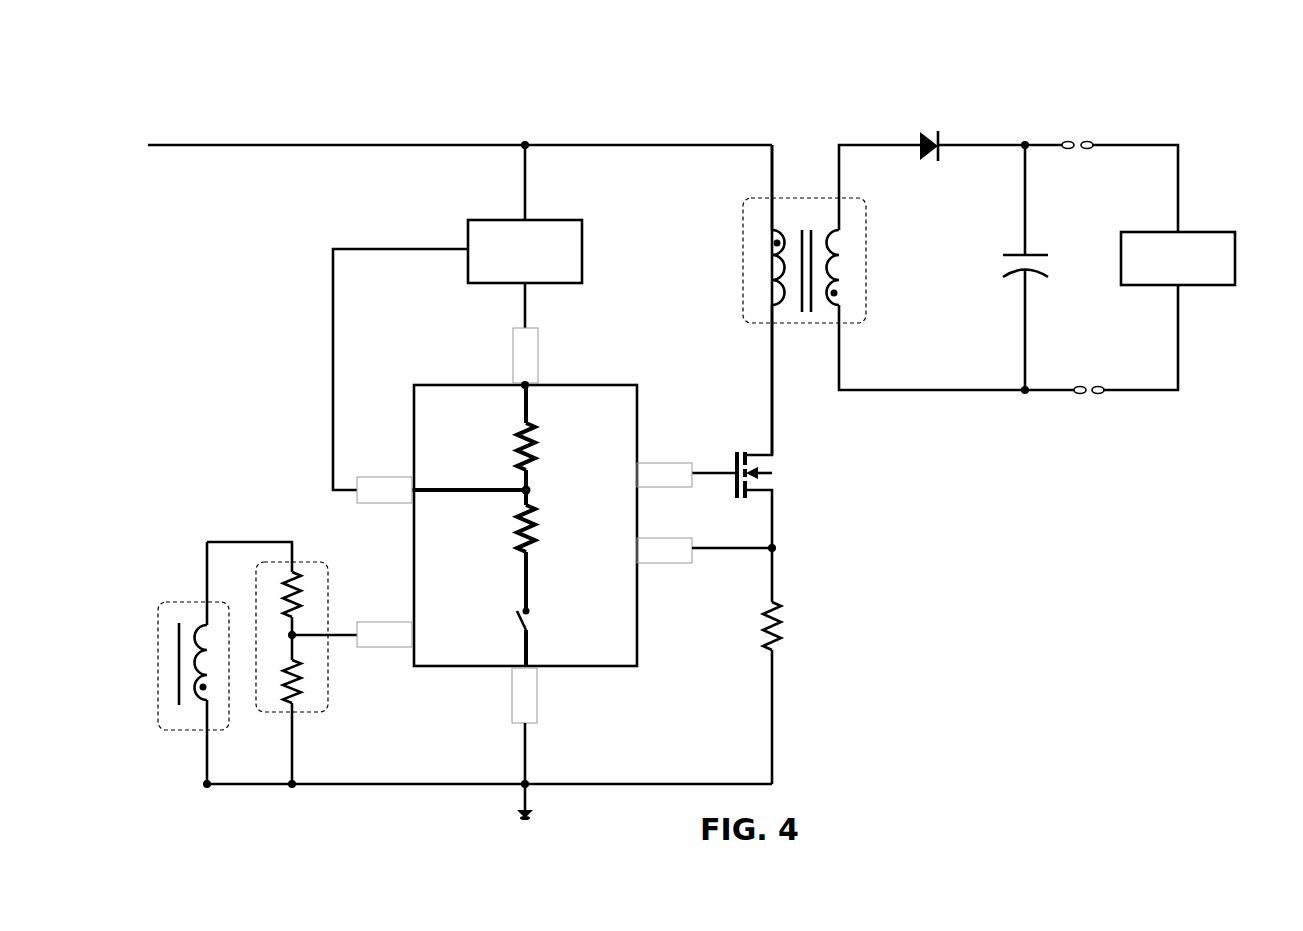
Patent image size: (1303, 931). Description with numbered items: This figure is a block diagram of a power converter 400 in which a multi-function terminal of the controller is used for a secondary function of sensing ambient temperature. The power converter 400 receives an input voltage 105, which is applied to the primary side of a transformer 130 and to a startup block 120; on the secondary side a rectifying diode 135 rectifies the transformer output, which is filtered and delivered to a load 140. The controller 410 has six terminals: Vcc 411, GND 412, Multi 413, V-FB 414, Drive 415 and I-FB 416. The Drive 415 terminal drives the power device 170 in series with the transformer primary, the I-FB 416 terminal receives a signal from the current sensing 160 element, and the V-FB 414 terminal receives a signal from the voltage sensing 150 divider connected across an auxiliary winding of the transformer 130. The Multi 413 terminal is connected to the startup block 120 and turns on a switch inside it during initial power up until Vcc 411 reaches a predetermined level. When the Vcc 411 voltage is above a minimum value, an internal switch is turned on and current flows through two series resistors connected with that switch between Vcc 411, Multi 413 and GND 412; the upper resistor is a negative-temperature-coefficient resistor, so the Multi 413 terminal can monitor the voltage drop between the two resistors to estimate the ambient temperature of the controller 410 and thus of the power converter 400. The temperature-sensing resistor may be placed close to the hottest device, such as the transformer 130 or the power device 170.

The input voltage 105 is at (460, 148).
The startup block 120 is at (457, 317).
The transformer 130 is at (805, 205).
The rectifying diode 135 is at (929, 116).
The load 140 is at (1205, 221).
The voltage sensing 150 is at (309, 727).
The current sensing 160 is at (788, 631).
The power device 170 is at (785, 467).
The power converter 400 is at (1021, 222).
The controller 410 is at (649, 379).
The Vcc terminal 411 is at (525, 358).
The GND terminal 412 is at (524, 744).
The Multi terminal 413 is at (384, 490).
The V-FB terminal 414 is at (384, 634).
The Drive terminal 415 is at (664, 475).
The I-FB terminal 416 is at (704, 550).